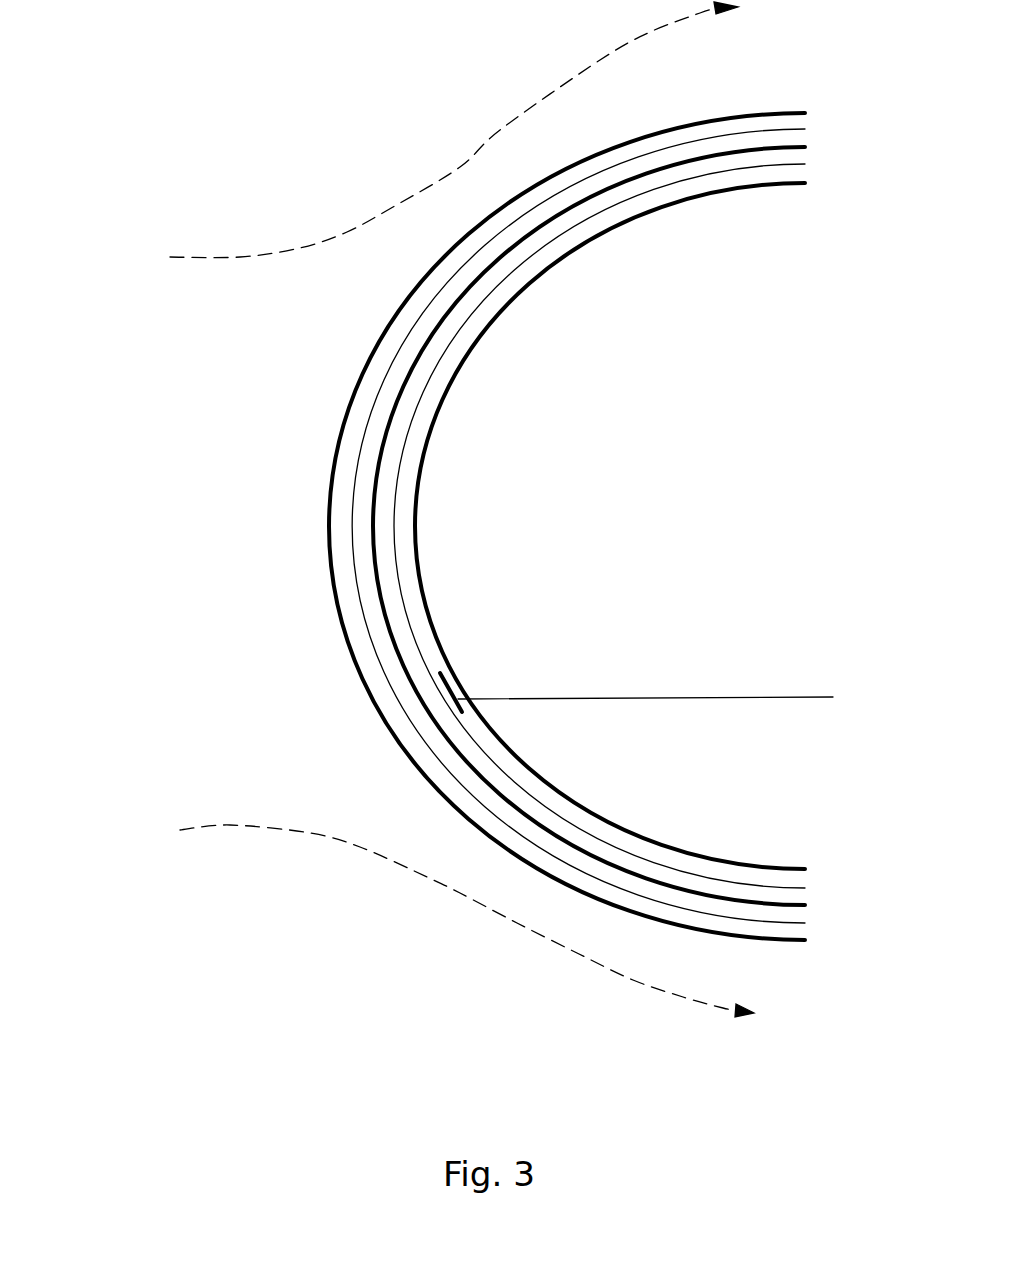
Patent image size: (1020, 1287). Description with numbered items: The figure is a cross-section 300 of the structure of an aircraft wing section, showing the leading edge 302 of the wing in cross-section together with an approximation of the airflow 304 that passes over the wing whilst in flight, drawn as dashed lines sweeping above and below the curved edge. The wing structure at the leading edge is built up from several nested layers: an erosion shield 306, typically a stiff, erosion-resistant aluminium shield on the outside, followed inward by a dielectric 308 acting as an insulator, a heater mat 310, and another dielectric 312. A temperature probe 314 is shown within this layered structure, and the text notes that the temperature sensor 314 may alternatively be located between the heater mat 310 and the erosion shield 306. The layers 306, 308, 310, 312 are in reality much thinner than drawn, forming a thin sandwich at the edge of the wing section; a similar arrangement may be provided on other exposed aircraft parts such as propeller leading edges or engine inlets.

The cross-section 300 is at (282, 40).
The leading edge 302 is at (664, 528).
The airflow 304 is at (342, 233).
The erosion shield 306 is at (343, 420).
The dielectric 308 is at (353, 473).
The heater mat 310 is at (372, 535).
The dielectric 312 is at (402, 603).
The temperature probe 314 is at (443, 681).